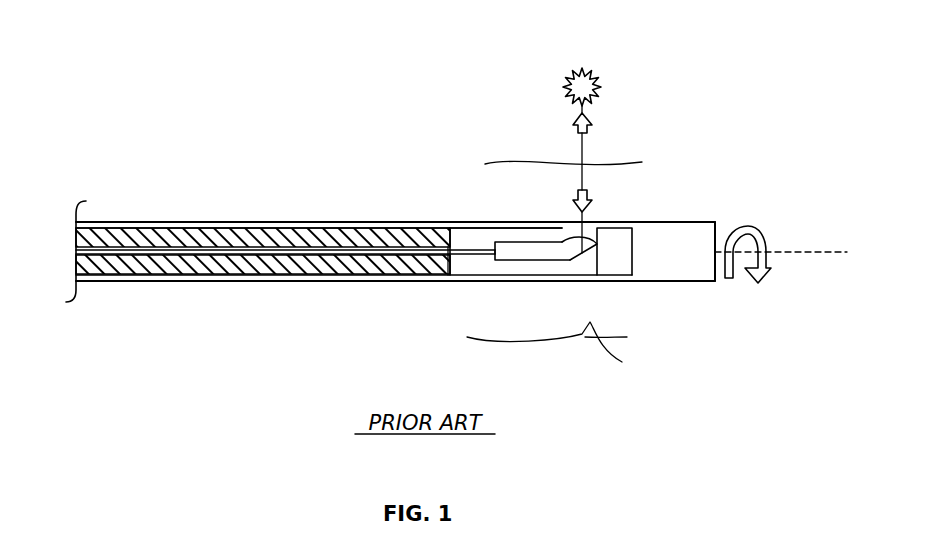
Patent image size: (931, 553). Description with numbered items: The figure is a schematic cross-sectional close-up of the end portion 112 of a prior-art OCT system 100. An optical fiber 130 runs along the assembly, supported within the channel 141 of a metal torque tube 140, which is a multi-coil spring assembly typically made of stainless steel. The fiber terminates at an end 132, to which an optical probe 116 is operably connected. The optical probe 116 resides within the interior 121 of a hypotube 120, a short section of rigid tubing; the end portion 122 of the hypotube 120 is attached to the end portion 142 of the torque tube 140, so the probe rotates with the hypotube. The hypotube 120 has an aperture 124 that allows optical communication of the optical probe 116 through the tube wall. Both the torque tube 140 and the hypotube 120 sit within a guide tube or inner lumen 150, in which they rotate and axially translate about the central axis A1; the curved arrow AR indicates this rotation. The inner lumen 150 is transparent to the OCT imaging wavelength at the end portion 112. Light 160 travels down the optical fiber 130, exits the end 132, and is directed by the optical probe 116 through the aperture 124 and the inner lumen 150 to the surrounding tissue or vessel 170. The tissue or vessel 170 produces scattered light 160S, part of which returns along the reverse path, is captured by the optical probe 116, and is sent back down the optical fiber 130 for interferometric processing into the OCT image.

The OCT system 100 is at (185, 81).
The end portion 112 is at (694, 138).
The optical probe 116 is at (572, 262).
The hypotube 120 is at (650, 222).
The interior 121 is at (487, 262).
The end portion 122 is at (457, 277).
The aperture 124 is at (592, 234).
The optical fiber 130 is at (337, 243).
The end 132 is at (490, 243).
The torque tube 140 is at (278, 230).
The channel 141 is at (301, 247).
The end portion 142 is at (447, 277).
The inner lumen 150 is at (232, 222).
The light 160 is at (593, 125).
The scattered light 160S is at (603, 80).
The tissue or vessel 170 is at (550, 163).
The rotation direction AR is at (744, 228).
The central axis A1 is at (782, 252).